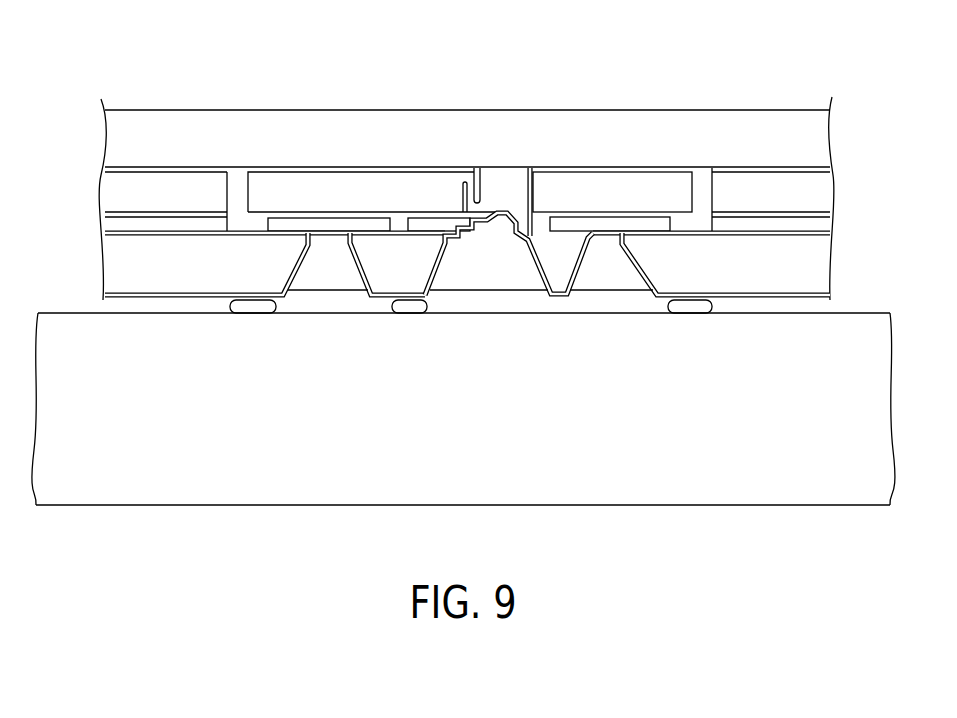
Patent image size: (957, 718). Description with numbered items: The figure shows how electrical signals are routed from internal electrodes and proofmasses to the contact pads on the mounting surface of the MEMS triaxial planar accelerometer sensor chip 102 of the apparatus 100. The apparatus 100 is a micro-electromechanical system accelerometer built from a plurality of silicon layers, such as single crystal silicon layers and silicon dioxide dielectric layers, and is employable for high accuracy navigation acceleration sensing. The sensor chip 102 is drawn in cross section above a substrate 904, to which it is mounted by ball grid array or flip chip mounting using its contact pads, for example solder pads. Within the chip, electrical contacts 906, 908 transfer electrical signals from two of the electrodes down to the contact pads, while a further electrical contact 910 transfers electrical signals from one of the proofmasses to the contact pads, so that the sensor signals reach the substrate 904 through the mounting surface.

The apparatus 100 is at (148, 68).
The MEMS triaxial planar accelerometer sensor chip 102 is at (105, 137).
The substrate 904 is at (80, 313).
The electrical contact 906 is at (298, 264).
The electrical contact 908 is at (636, 265).
The electrical contact 910 is at (438, 264).